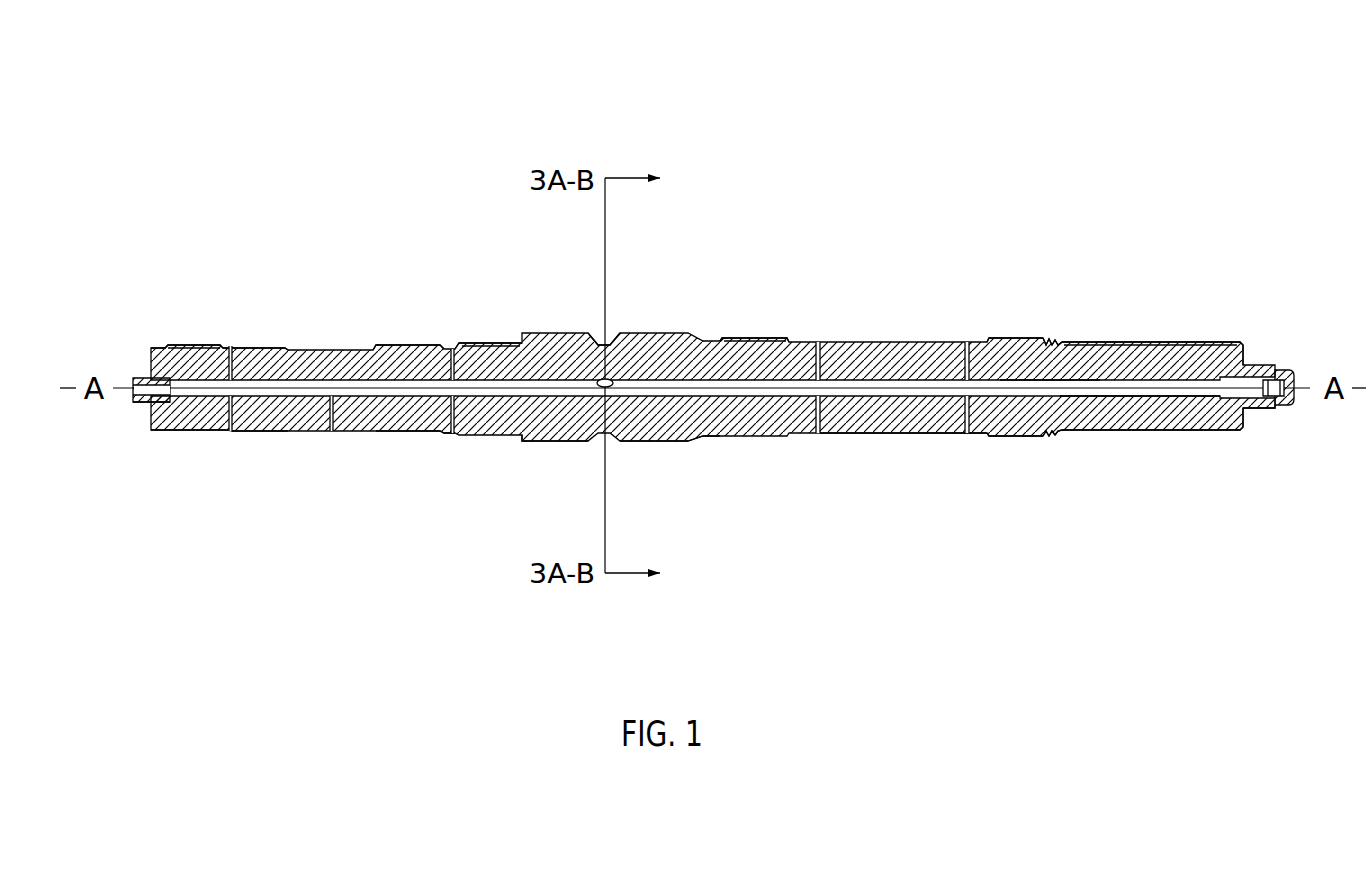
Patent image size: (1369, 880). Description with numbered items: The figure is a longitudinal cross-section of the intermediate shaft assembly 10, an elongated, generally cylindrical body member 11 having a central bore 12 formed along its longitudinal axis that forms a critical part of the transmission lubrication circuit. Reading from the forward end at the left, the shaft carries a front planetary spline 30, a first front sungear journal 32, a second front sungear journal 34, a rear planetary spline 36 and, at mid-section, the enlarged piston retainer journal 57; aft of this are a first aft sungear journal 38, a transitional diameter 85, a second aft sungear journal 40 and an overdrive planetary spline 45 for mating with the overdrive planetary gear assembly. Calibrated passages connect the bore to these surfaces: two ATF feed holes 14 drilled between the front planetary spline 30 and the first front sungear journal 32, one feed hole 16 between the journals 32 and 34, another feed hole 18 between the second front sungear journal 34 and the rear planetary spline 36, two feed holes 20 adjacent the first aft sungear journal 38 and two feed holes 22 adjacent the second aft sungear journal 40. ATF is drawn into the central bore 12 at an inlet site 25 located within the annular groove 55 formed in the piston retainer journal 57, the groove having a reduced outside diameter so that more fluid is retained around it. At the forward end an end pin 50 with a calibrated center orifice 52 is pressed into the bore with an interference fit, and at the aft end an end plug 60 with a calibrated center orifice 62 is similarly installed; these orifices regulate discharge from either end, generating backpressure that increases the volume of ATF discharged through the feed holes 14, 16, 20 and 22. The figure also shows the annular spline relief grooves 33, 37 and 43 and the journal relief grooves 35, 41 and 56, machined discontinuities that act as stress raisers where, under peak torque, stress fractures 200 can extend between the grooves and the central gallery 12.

The intermediate shaft assembly 10 is at (795, 110).
The body member 11 is at (1170, 430).
The central bore 12 is at (1075, 395).
The ATF feed holes 14 is at (231, 346).
The feed hole 16 is at (332, 432).
The feed hole 18 is at (452, 349).
The feed holes 20 is at (818, 342).
The feed holes 22 is at (967, 342).
The ATF inlet site 25 is at (590, 390).
The front planetary spline 30 is at (190, 345).
The first front sungear journal 32 is at (268, 348).
The spline relief groove 33 is at (226, 431).
The second front sungear journal 34 is at (408, 345).
The journal relief groove 35 is at (447, 432).
The rear planetary spline 36 is at (500, 343).
The spline relief groove 37 is at (522, 441).
The first aft sungear journal 38 is at (752, 338).
The second aft sungear journal 40 is at (1016, 338).
The journal relief groove 41 is at (1048, 437).
The spline relief groove 43 is at (1055, 345).
The overdrive planetary spline 45 is at (1135, 342).
The end pin 50 is at (138, 377).
The calibrated center orifice 52 is at (133, 403).
The annular groove 55 is at (603, 345).
The journal relief groove 56 is at (708, 437).
The piston retainer journal 57 is at (655, 441).
The end plug 60 is at (1296, 370).
The calibrated center orifice 62 is at (1298, 405).
The transitional diameter 85 is at (897, 435).
The stress fractures 200 is at (1047, 382).